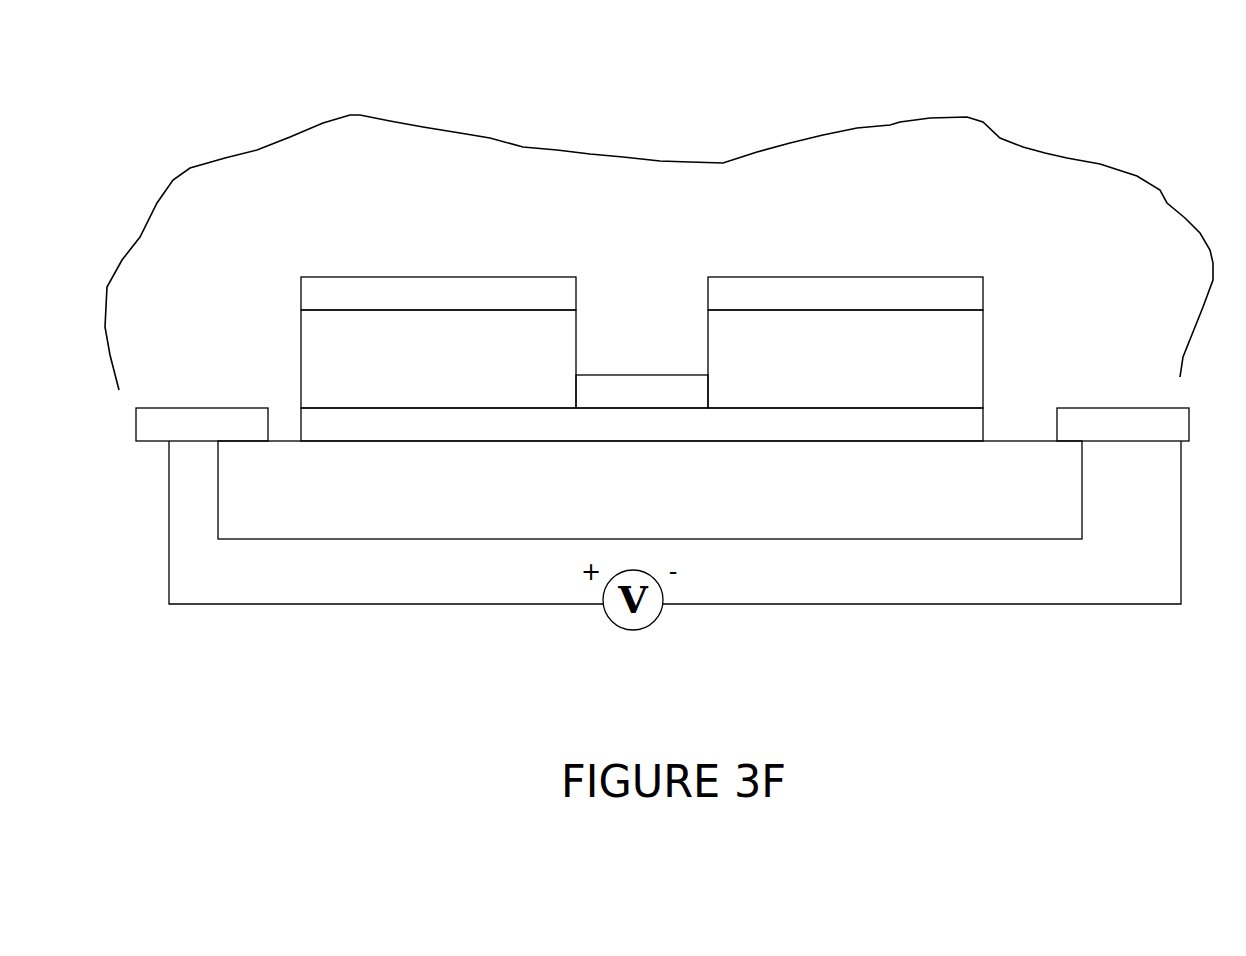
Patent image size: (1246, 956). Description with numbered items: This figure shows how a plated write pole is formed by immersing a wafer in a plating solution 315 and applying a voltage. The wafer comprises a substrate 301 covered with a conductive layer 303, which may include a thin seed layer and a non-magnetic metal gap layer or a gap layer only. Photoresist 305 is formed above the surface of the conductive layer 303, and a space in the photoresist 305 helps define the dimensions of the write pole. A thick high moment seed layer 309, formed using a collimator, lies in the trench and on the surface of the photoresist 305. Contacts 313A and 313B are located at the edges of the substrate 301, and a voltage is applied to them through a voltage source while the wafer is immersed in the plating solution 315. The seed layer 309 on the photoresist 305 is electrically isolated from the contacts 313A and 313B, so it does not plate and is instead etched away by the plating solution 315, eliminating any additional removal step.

The substrate 301 is at (1062, 526).
The conductive layer 303 is at (968, 435).
The photoresist 305 is at (345, 402).
The seed layer 309 is at (345, 304).
The contact 313A is at (192, 435).
The contact 313B is at (1172, 435).
The plating solution 315 is at (1065, 180).